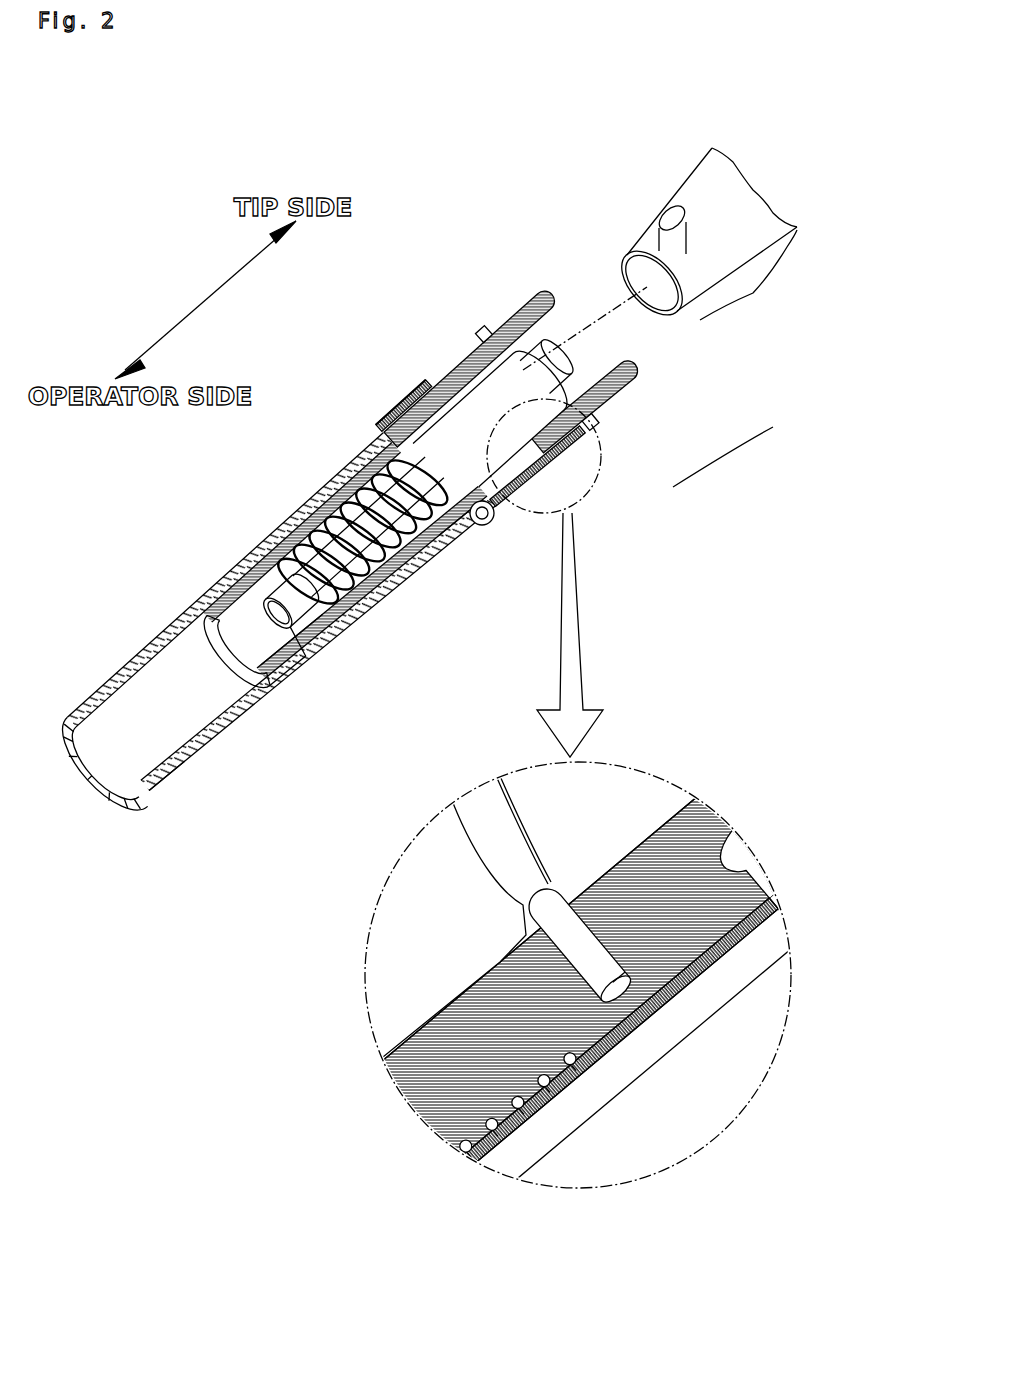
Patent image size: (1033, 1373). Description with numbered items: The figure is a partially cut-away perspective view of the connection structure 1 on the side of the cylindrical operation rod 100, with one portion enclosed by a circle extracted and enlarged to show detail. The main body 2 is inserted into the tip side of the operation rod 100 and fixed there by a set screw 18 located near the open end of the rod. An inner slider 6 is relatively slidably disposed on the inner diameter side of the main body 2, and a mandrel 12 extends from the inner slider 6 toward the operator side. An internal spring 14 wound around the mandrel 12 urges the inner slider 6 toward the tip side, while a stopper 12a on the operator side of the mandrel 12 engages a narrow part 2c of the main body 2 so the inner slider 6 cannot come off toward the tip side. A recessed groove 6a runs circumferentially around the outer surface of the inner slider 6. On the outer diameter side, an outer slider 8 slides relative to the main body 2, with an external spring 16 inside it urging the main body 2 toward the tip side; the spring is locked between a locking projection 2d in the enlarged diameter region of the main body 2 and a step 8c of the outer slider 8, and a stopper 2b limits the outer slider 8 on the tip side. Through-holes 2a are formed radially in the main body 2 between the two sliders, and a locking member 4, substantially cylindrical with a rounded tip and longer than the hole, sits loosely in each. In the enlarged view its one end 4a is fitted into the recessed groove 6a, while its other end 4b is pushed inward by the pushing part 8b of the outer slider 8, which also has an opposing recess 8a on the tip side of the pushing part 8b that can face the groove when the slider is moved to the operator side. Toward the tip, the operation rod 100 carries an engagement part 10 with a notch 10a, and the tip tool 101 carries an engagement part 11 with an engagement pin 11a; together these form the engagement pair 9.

The treatment instrument 1 is at (500, 230).
The main body 2 is at (542, 296).
The through-holes 2a is at (606, 1043).
The stopper 2b is at (487, 338).
The narrow part 2c is at (307, 582).
The locking projection 2d is at (488, 526).
The locking member 4 is at (455, 916).
The one end 4a is at (578, 944).
The other end 4b is at (619, 977).
The inner slider 6 is at (412, 388).
The recessed groove 6a is at (470, 352).
The outer slider 8 is at (596, 436).
The opposing recess 8a is at (746, 847).
The pushing part 8b is at (653, 1064).
The step 8c is at (611, 1049).
The engagement pair 9 is at (735, 452).
The engagement part 10 is at (606, 440).
The notch 10a is at (547, 378).
The engagement part 11 is at (773, 427).
The engagement pin 11a is at (663, 207).
The mandrel 12 is at (305, 548).
The stopper 12a is at (280, 600).
The internal spring 14 is at (352, 490).
The external spring 16 is at (520, 1105).
The set screw 18 is at (480, 528).
The operation rod 100 is at (213, 765).
The tip tool 101 is at (690, 182).